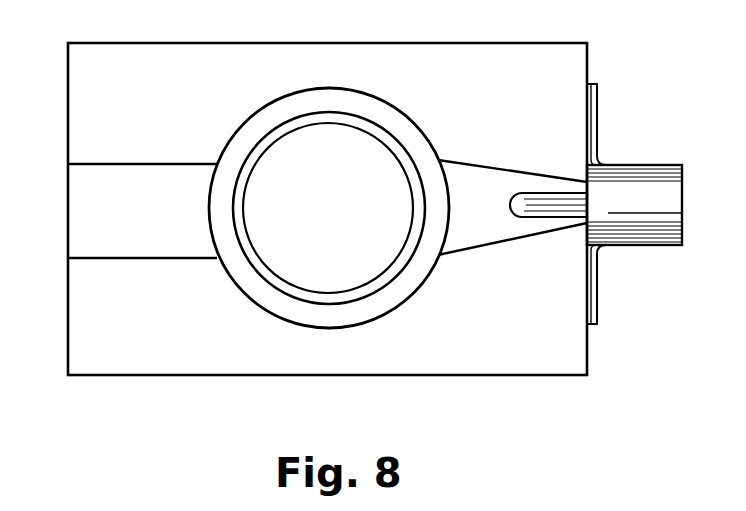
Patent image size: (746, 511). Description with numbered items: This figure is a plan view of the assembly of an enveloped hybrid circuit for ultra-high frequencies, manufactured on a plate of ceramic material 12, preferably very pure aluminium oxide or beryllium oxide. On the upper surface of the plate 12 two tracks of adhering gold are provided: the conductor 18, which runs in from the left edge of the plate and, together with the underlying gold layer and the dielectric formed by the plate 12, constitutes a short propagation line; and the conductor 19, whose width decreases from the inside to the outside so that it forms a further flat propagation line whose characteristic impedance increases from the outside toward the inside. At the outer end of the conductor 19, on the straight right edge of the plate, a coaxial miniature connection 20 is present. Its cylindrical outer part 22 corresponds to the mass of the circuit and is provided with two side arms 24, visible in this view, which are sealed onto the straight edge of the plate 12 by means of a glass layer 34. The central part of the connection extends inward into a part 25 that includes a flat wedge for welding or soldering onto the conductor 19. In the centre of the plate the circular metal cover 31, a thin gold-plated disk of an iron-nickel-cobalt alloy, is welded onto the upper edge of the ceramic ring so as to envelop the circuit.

The plate of ceramic material 12 is at (233, 355).
The conductor 18 is at (100, 197).
The conductor 19 is at (466, 234).
The coaxial miniature connection 20 is at (683, 208).
The cylindrical outer part 22 is at (647, 187).
The side arms 24 is at (597, 110).
The part including a flat wedge 25 is at (540, 207).
The metal cover 31 is at (310, 100).
The glass layer 34 is at (647, 125).